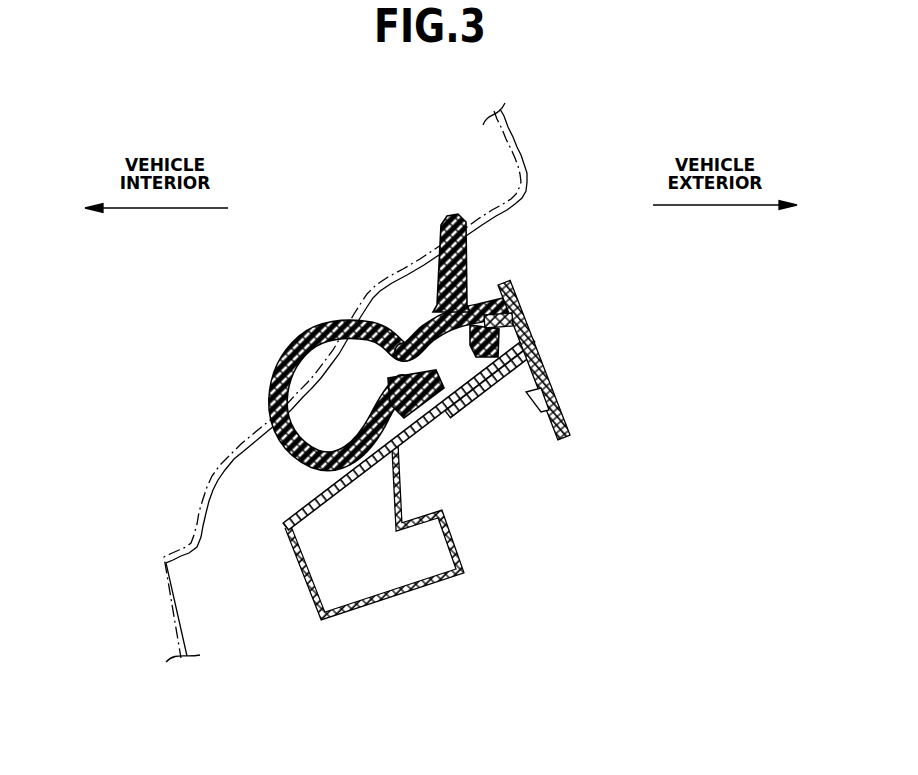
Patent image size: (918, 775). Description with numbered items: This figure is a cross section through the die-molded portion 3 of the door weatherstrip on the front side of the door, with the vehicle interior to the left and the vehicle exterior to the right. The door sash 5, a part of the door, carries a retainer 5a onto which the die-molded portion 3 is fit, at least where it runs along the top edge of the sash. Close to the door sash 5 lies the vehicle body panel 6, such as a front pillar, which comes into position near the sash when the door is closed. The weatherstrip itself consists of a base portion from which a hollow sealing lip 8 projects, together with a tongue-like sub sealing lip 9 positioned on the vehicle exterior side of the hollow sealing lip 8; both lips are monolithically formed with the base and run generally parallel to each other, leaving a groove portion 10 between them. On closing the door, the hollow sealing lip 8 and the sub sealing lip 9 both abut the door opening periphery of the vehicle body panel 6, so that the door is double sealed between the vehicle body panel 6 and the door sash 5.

The die-molded portion 3 is at (386, 325).
The door sash 5 is at (576, 360).
The retainer 5a is at (523, 313).
The vehicle body panel 6 is at (522, 197).
The hollow sealing lip 8 is at (295, 332).
The sub sealing lip 9 is at (462, 250).
The groove portion 10 is at (422, 323).